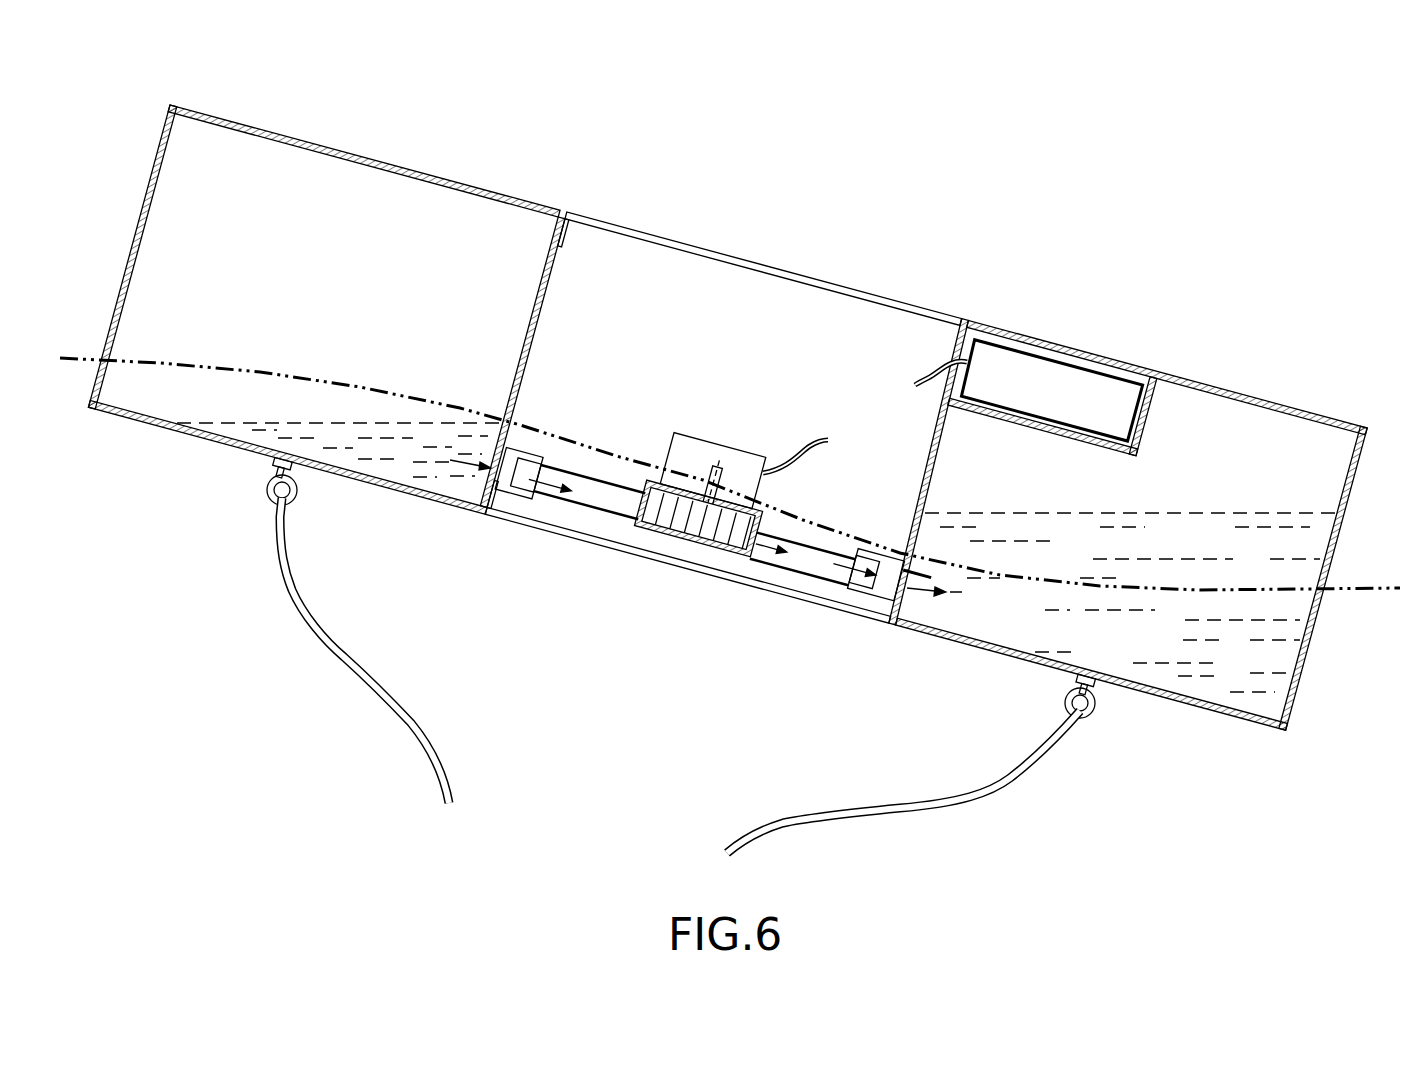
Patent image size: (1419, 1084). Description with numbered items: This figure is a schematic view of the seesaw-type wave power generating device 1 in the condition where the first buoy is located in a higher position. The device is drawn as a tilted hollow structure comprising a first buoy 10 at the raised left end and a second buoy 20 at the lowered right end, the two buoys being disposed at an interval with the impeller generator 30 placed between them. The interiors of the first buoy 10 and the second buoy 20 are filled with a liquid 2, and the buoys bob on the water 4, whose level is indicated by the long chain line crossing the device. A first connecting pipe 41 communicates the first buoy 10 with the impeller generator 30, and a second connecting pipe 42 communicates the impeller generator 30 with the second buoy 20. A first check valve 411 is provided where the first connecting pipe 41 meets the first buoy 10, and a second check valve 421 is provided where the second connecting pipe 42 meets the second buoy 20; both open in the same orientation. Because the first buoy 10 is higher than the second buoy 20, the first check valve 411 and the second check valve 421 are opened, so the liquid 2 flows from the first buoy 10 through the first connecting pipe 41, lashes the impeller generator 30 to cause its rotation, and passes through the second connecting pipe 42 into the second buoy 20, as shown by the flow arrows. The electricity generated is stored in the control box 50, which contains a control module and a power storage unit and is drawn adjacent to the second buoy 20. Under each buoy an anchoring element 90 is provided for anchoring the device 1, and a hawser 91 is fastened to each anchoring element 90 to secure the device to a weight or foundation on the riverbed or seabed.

The seesaw-type wave power generating device 1 is at (800, 236).
The liquid 2 is at (1263, 532).
The water 4 is at (155, 357).
The first buoy 10 is at (422, 172).
The second buoy 20 is at (1233, 388).
The impeller generator 30 is at (722, 440).
The first connecting pipe 41 is at (587, 513).
The first check valve 411 is at (490, 510).
The second connecting pipe 42 is at (800, 570).
The second check valve 421 is at (918, 572).
The control box 50 is at (1055, 375).
The anchoring element 90 is at (268, 490).
The hawser 91 is at (910, 818).